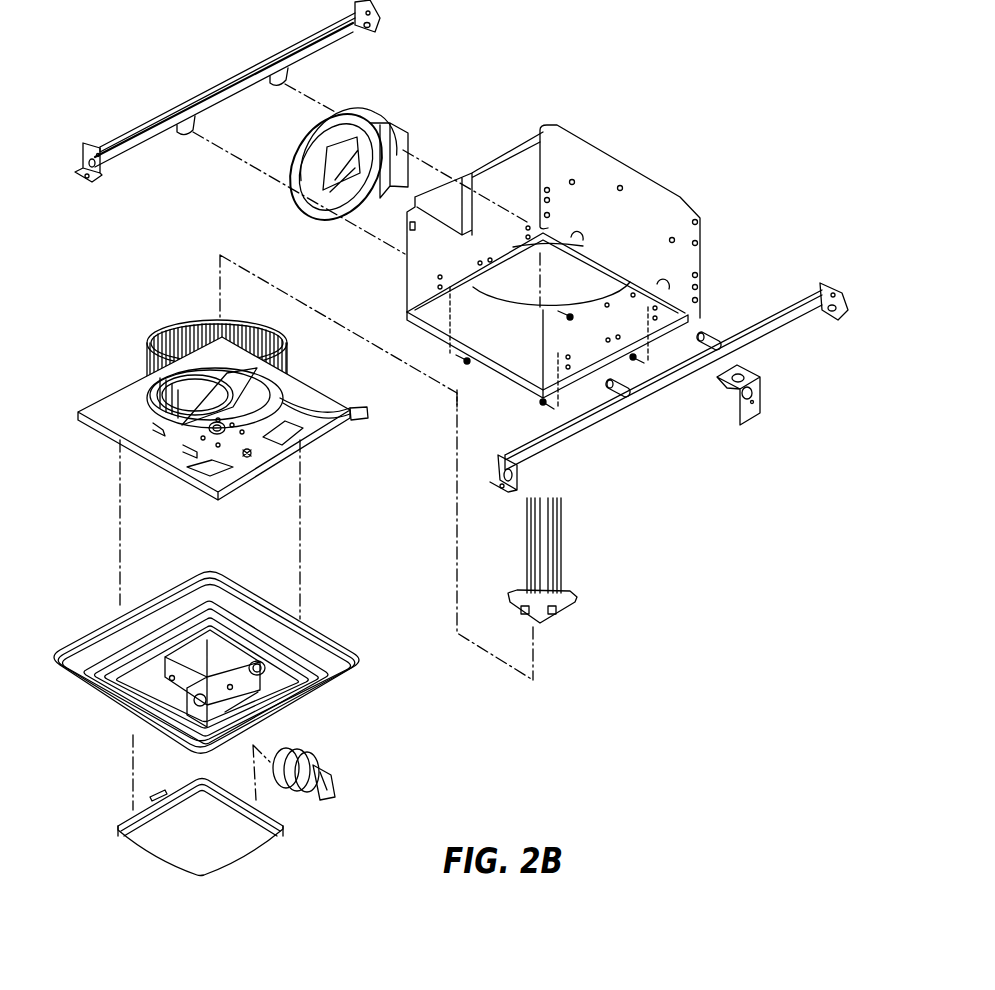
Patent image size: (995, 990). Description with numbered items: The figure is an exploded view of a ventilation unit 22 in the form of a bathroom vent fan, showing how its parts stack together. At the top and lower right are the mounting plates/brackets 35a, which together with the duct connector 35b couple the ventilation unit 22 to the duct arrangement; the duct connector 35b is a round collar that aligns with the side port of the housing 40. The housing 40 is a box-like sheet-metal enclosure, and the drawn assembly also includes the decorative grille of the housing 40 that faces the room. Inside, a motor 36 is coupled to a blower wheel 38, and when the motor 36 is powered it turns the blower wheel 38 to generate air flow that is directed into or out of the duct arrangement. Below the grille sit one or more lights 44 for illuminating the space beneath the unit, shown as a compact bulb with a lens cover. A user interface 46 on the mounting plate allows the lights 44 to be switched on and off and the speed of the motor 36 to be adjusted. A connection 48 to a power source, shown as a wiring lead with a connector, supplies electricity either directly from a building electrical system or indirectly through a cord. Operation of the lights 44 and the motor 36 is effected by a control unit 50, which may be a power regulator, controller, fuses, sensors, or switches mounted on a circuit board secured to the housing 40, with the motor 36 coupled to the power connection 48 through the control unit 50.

The ventilation unit 22 is at (451, 438).
The mounting plates/brackets 35a is at (460, 246).
The duct connector 35b is at (353, 145).
The motor 36 is at (211, 418).
The blower wheel 38 is at (195, 324).
The housing 40 is at (407, 421).
The lights 44 is at (330, 764).
The user interface 46 is at (266, 488).
The connection to a power source 48 is at (356, 421).
The control unit 50 is at (321, 452).